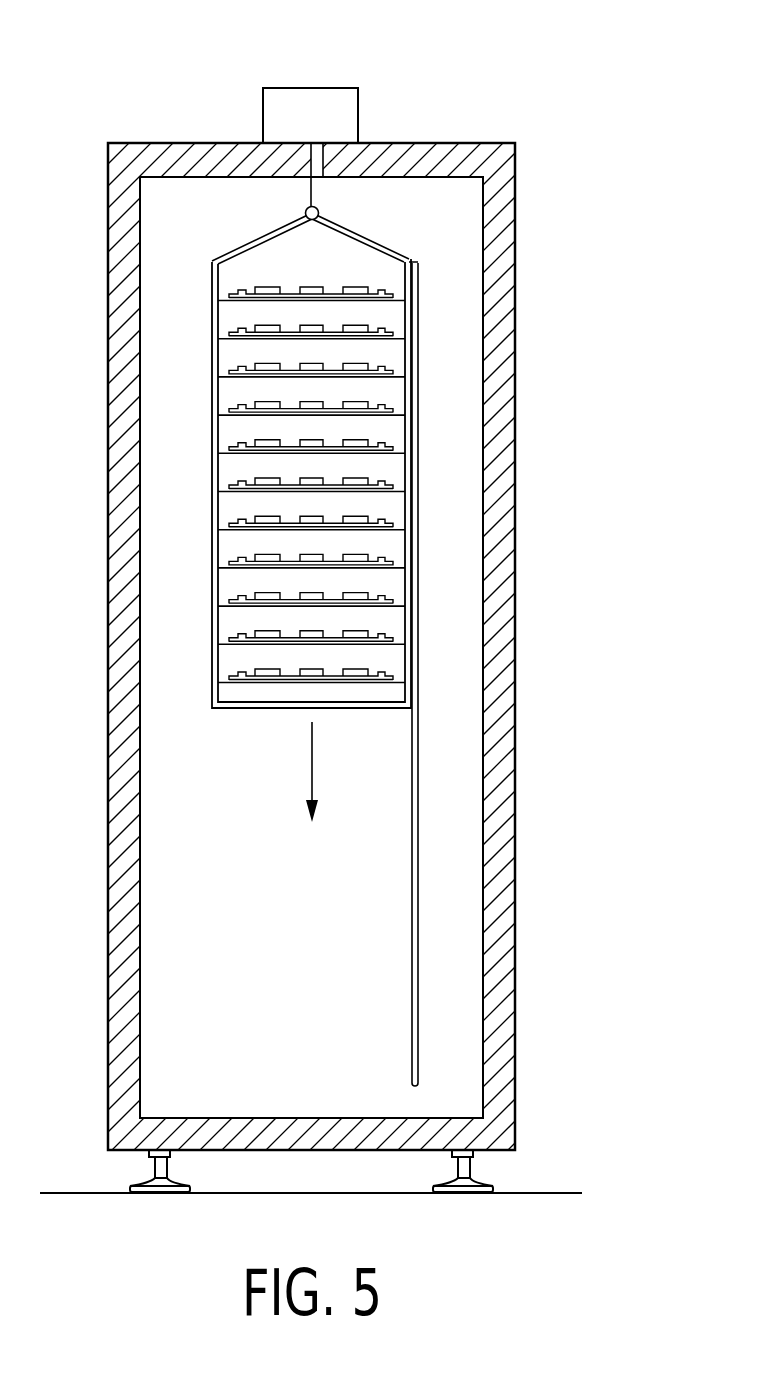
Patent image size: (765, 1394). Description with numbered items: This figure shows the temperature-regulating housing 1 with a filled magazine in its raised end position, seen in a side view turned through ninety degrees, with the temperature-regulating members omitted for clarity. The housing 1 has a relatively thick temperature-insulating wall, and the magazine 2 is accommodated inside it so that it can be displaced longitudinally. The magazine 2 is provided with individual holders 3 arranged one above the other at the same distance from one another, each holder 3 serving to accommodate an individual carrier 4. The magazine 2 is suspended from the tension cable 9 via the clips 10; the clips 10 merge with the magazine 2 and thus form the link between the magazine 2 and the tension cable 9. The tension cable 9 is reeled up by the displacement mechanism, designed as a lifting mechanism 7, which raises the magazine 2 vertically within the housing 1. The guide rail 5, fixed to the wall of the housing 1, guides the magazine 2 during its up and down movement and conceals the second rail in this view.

The temperature-regulating housing 1 is at (500, 462).
The magazine 2 is at (240, 712).
The holder 3 is at (397, 643).
The carrier 4 is at (298, 292).
The guide rail 5 is at (418, 265).
The lifting mechanism 7 is at (305, 88).
The tension cable 9 is at (313, 197).
The clip 10 is at (373, 237).